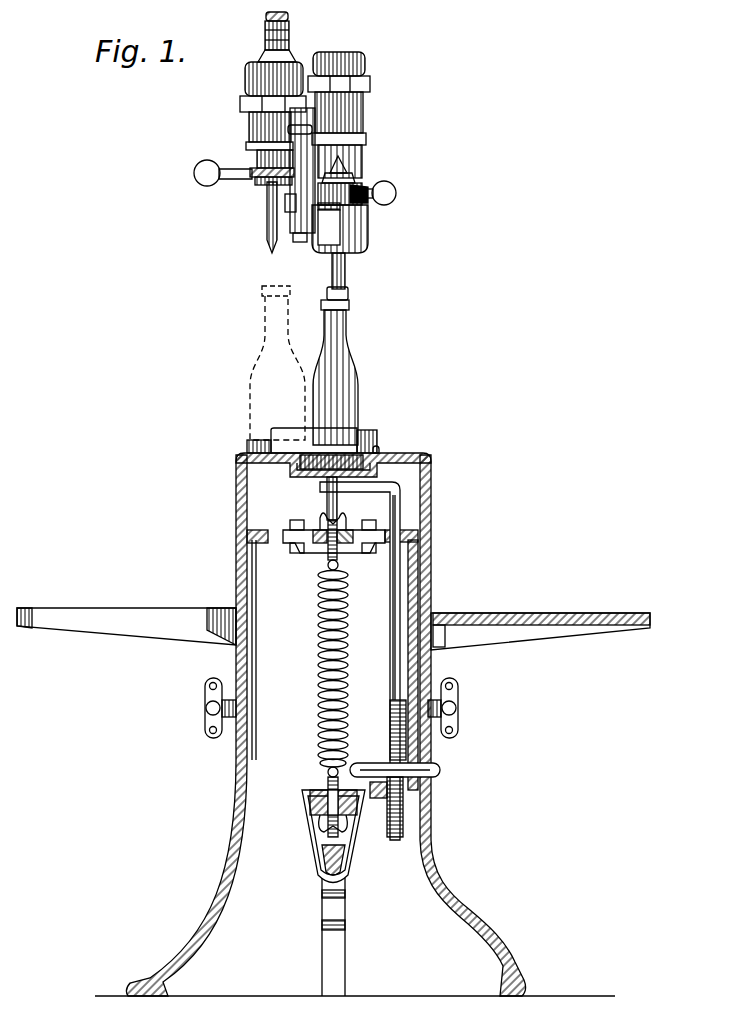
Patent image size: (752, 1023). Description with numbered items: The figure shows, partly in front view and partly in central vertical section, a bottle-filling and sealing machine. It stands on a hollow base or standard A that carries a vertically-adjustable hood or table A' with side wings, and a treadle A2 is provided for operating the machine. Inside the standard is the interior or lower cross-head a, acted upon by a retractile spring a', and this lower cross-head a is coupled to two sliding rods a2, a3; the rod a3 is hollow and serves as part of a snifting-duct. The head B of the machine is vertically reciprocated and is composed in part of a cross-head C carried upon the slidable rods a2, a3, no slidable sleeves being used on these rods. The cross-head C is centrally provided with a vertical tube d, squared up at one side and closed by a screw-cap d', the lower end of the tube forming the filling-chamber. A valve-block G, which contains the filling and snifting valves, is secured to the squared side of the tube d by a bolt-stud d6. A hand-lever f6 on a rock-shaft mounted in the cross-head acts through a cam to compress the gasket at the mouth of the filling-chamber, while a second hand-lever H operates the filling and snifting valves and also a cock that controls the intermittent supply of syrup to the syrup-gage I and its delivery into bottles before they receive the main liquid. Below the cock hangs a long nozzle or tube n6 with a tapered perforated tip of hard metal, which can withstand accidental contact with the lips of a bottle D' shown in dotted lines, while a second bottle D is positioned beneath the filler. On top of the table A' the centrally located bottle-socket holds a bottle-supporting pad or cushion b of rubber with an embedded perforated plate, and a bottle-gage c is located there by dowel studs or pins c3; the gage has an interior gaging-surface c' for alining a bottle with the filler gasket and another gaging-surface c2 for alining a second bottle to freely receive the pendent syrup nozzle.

The hollow base or standard A is at (333, 725).
The vertically-adjustable hood or table A' is at (316, 646).
The treadle A2 is at (337, 863).
The interior or lower cross-head a is at (307, 657).
The retractile spring a' is at (315, 669).
The sliding rod a2 is at (345, 228).
The sliding rod a3 is at (346, 268).
The head B is at (288, 37).
The syrup-gage I is at (265, 112).
The screw-cap d' is at (362, 93).
The vertical tube d is at (355, 139).
The cross-head C is at (355, 183).
The hand-lever f6 is at (397, 195).
The hand-lever H is at (231, 161).
The valve-block G is at (300, 186).
The bolt-stud d6 is at (290, 200).
The nozzle or tube n6 is at (275, 235).
The bottle D is at (361, 372).
The bottle D' is at (255, 363).
The gaging-surface c2 is at (249, 438).
The bottle-gage c is at (311, 417).
The gaging-surface c' is at (385, 431).
The dowel studs or pins c3 is at (380, 448).
The bottle-supporting pad or cushion b is at (320, 460).